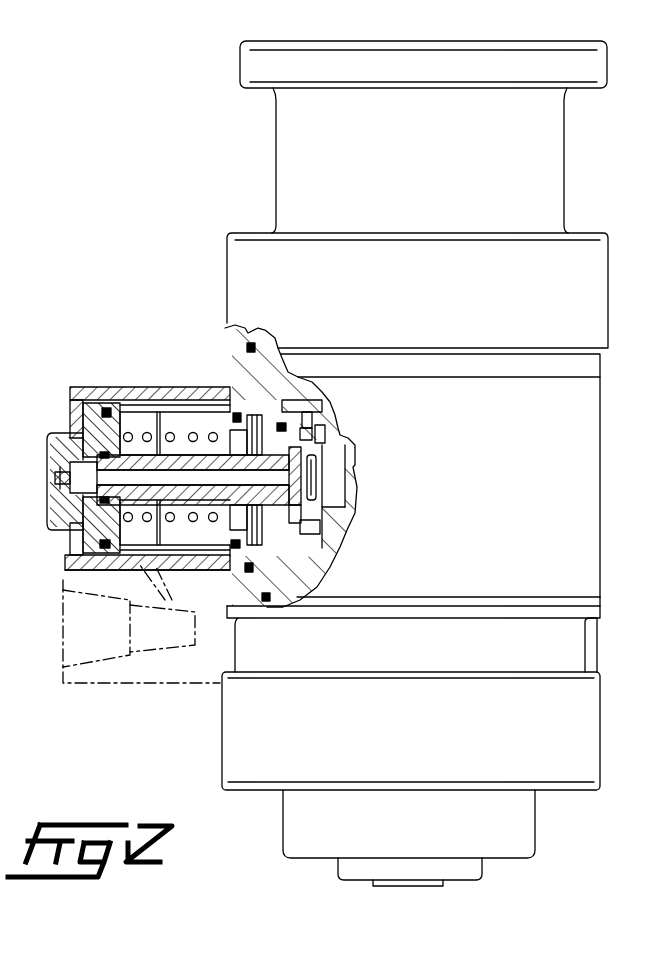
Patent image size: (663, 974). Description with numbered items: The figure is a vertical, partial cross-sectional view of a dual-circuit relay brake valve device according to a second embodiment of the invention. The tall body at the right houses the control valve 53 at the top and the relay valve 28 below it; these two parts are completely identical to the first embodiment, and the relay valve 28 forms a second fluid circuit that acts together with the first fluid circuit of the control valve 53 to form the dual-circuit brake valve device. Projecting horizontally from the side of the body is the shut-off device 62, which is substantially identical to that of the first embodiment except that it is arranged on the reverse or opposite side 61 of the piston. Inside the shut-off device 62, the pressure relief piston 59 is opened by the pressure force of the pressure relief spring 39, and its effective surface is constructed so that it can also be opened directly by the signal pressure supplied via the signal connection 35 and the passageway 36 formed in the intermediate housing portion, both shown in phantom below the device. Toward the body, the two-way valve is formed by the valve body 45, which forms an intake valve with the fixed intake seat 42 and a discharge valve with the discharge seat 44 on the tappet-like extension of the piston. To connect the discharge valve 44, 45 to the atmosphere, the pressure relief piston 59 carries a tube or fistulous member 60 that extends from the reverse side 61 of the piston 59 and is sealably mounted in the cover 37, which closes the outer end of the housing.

The relay valve 28 is at (522, 863).
The control valve 53 is at (299, 38).
The shut-off device 62 is at (90, 383).
The cover member 37 is at (72, 444).
The tube or fistulous member 60 is at (64, 522).
The pressure relief spring 39 is at (146, 440).
The pressure relief piston 59 is at (185, 440).
The discharge seat 44 is at (265, 470).
The valve body 45 is at (303, 454).
The fixed intake seat 42 is at (279, 423).
The reverse side 61 is at (226, 548).
The inclined passageway 36 is at (172, 618).
The signal connection 35 is at (83, 649).